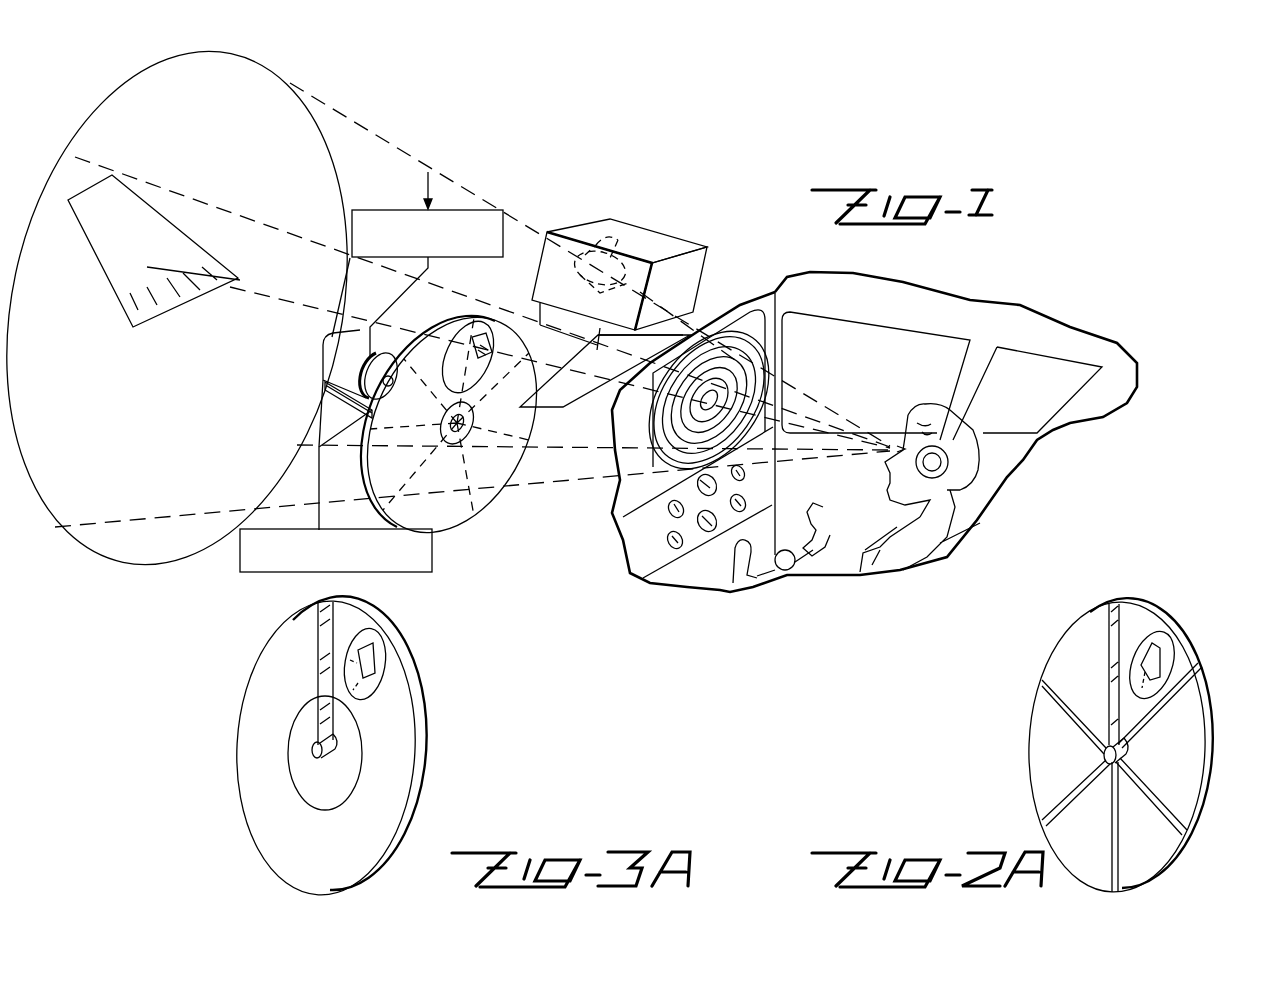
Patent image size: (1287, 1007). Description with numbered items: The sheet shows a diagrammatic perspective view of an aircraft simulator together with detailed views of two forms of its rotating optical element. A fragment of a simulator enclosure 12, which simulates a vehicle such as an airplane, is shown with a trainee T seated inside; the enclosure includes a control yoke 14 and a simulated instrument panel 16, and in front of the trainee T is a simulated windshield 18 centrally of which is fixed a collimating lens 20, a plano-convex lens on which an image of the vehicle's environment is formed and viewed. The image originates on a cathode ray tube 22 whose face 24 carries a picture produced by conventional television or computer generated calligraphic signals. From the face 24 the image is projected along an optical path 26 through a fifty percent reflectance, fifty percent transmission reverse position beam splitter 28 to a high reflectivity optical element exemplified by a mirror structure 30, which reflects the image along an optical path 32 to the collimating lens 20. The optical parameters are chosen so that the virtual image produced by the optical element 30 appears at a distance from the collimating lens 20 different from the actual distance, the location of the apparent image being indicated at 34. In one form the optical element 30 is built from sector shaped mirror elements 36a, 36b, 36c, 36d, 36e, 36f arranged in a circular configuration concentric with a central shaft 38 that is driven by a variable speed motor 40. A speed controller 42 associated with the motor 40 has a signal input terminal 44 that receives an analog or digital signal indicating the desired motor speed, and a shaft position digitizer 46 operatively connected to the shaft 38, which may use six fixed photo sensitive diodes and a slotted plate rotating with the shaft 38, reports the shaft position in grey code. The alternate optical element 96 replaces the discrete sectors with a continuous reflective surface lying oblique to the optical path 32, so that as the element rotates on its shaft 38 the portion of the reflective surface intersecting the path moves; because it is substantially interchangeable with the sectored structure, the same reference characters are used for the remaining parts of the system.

In FIG. 1, the simulator enclosure 12 is at (723, 590).
In FIG. 1, the control yoke 14 is at (823, 507).
In FIG. 1, the simulated instrument panel 16 is at (667, 562).
In FIG. 1, the simulated windshield 18 is at (653, 387).
In FIG. 1, the collimating lens 20 is at (753, 381).
In FIG. 1, the cathode ray tube 22 is at (663, 302).
In FIG. 1, the face 24 is at (540, 325).
In FIG. 1, the optical path 26 is at (597, 345).
In FIG. 1, the beam splitter 28 is at (583, 400).
In FIG. 1, the optical element 30 is at (460, 317).
In FIG. 2A, the optical element 30 is at (1048, 647).
In FIG. 1, the optical path 32 is at (512, 353).
In FIG. 1, the apparent image location 34 is at (336, 150).
In FIG. 2A, the sector shaped mirror element 36a is at (1098, 686).
In FIG. 2A, the sector shaped mirror element 36b is at (1076, 761).
In FIG. 2A, the sector shaped mirror element 36c is at (1103, 853).
In FIG. 2A, the sector shaped mirror element 36d is at (1160, 853).
In FIG. 2A, the sector shaped mirror element 36e is at (1190, 761).
In FIG. 2A, the sector shaped mirror element 36f is at (1183, 655).
In FIG. 1, the central shaft 38 is at (391, 376).
In FIG. 3A, the central shaft 38 is at (317, 758).
In FIG. 2A, the central shaft 38 is at (1105, 760).
In FIG. 1, the variable speed motor 40 is at (324, 350).
In FIG. 1, the speed controller 42 is at (455, 257).
In FIG. 1, the signal input terminal 44 is at (428, 182).
In FIG. 1, the shaft position digitizer 46 is at (240, 567).
In FIG. 3A, the optical element 96 is at (420, 777).
In FIG. 1, the trainee T is at (963, 423).